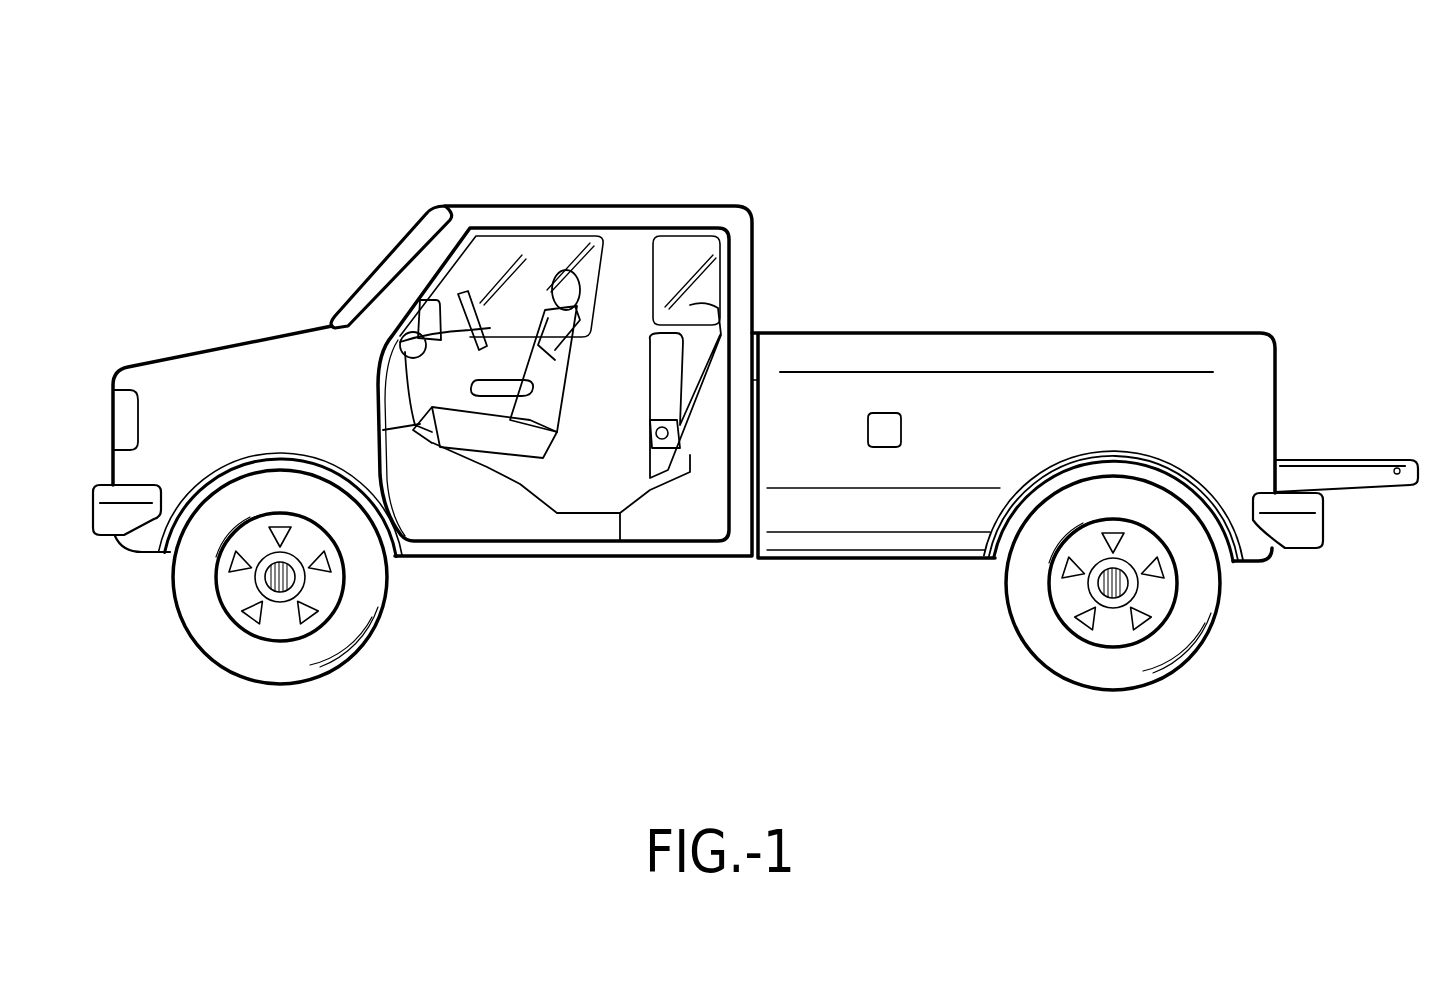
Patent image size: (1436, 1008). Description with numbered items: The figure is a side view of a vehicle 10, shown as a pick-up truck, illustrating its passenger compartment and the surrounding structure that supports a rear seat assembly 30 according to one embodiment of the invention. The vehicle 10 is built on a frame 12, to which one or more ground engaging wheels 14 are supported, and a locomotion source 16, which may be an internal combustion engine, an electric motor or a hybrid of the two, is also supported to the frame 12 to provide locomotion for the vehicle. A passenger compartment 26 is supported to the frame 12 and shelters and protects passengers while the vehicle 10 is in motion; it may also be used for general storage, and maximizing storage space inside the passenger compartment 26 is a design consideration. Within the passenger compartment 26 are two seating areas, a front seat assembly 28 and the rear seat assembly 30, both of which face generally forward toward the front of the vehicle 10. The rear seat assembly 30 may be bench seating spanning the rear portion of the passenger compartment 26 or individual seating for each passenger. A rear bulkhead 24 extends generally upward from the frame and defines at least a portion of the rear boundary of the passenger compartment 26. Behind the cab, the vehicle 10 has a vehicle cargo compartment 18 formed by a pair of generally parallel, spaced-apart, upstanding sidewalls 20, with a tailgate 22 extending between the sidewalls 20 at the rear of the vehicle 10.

The vehicle 10 is at (828, 160).
The frame 12 is at (582, 549).
The ground engaging wheels 14 is at (200, 621).
The locomotion source 16 is at (190, 385).
The vehicle cargo compartment 18 is at (1102, 277).
The sidewalls 20 is at (940, 333).
The tailgate 22 is at (1385, 468).
The rear bulkhead 24 is at (760, 378).
The passenger compartment 26 is at (492, 275).
The front seat assembly 28 is at (548, 320).
The rear seat assembly 30 is at (668, 292).